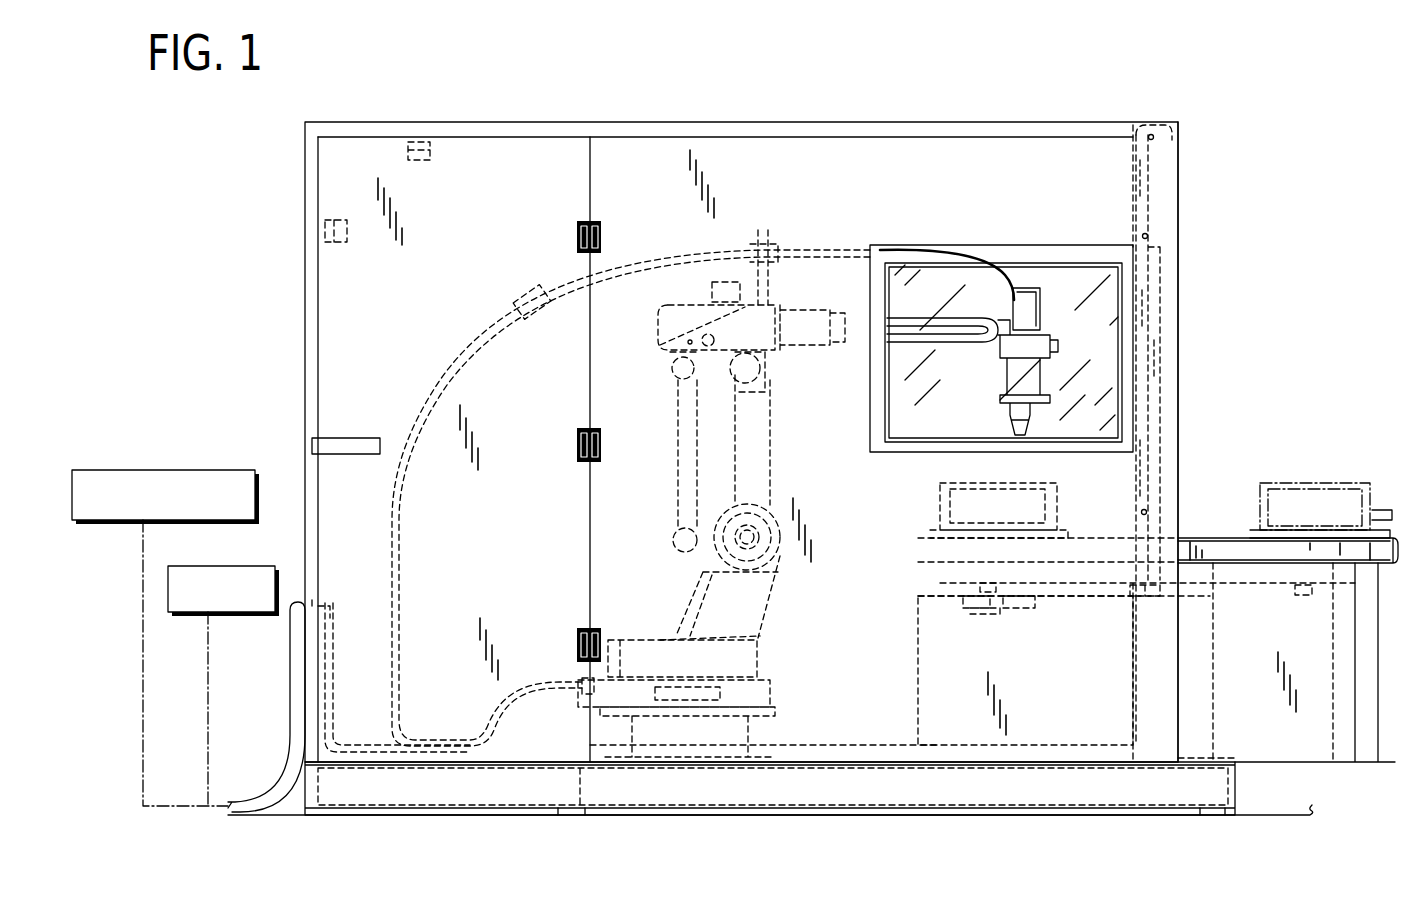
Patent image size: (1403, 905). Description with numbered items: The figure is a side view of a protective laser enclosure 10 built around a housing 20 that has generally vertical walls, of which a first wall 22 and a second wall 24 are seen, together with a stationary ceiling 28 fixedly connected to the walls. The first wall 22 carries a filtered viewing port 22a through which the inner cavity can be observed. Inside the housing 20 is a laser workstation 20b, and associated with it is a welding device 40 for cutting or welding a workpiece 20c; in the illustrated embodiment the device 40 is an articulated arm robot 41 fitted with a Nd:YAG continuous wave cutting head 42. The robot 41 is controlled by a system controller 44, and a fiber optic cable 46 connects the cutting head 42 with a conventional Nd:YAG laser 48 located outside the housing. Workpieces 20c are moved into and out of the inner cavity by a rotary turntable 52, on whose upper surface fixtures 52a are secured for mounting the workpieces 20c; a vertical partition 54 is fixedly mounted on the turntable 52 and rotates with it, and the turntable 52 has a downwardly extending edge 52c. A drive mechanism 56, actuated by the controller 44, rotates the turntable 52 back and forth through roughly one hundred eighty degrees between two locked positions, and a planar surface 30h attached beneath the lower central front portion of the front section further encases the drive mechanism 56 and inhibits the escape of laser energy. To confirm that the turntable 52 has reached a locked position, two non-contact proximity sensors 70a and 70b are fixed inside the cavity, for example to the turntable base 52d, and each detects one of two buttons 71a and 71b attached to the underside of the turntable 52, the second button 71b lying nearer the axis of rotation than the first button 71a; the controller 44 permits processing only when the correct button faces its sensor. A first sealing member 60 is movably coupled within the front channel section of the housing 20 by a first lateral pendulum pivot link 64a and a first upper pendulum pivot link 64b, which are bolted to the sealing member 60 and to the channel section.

The protective laser enclosure 10 is at (1160, 118).
The housing 20 is at (1198, 250).
The first wall 22 is at (893, 125).
The filtered viewing port 22a is at (1043, 262).
The second wall 24 is at (305, 240).
The stationary ceiling 28 is at (1025, 125).
The planar surface 30h is at (1265, 768).
The welding device 40 is at (675, 392).
The articulated arm robot 41 is at (663, 306).
The cutting head 42 is at (1020, 436).
The system controller 44 is at (152, 470).
The fiber optic cable 46 is at (790, 250).
The Nd:YAG laser 48 is at (235, 612).
The rotary turntable 52 is at (1230, 550).
The fixtures 52a is at (1355, 485).
The downwardly extending edge 52c is at (1258, 565).
The turntable base 52d is at (918, 706).
The vertical partition 54 is at (1152, 364).
The drive mechanism 56 is at (1130, 598).
The first sealing member 60 is at (1145, 314).
The first lateral pendulum pivot link 64a is at (1145, 466).
The first upper pendulum pivot link 64b is at (1152, 198).
The non-contact proximity sensor 70a is at (986, 612).
The non-contact proximity sensor 70b is at (1012, 612).
The first button 71a is at (978, 582).
The second button 71b is at (1305, 596).
The laser workstation 20b is at (940, 508).
The workpiece 20c is at (1312, 508).